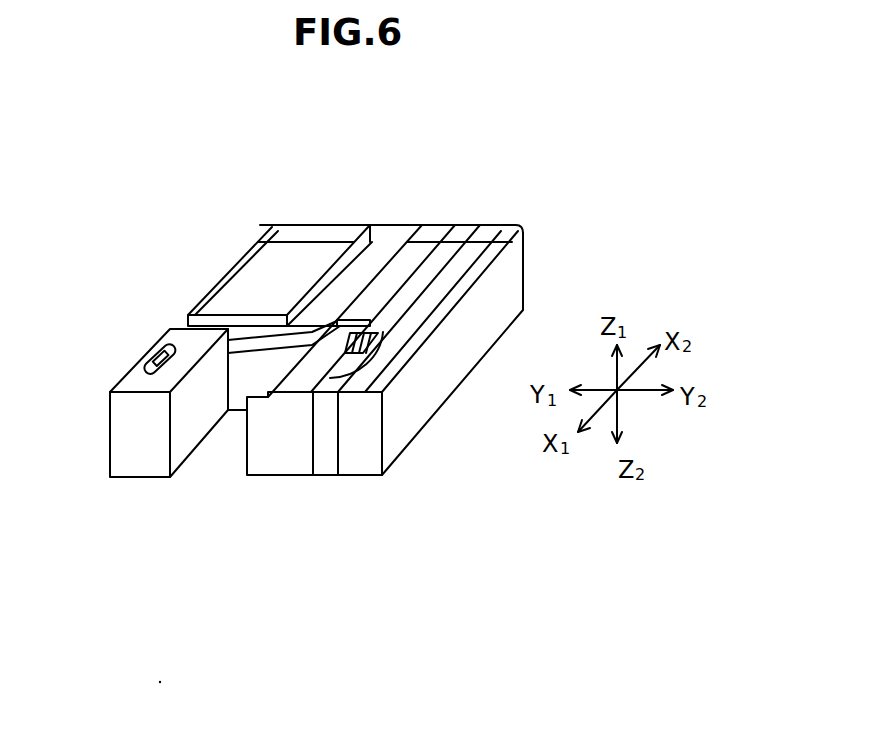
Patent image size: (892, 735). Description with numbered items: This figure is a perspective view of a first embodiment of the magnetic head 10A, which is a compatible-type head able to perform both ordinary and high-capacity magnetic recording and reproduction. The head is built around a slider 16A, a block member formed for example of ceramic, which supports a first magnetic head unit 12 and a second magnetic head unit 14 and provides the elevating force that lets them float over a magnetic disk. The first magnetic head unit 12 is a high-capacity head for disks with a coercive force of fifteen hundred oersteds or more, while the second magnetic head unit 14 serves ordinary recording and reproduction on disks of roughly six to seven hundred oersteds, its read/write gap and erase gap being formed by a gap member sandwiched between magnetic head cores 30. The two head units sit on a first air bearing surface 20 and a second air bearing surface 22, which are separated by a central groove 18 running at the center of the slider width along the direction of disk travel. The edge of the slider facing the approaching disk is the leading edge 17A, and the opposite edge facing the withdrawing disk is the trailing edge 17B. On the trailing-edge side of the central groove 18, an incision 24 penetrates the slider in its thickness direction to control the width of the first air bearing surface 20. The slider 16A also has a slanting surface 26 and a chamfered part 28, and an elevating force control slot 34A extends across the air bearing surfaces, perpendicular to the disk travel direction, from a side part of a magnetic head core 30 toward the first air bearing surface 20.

The magnetic head 10A is at (450, 87).
The first magnetic head unit 12 is at (158, 362).
The second magnetic head unit 14 is at (380, 341).
The slider 16A is at (413, 445).
The leading edge 17A is at (321, 233).
The trailing edge 17B is at (133, 400).
The central groove 18 is at (381, 252).
The first air bearing surface 20 is at (275, 277).
The second air bearing surface 22 is at (416, 255).
The incision 24 is at (233, 443).
The slanting surface 26 is at (283, 247).
The chamfered part 28 is at (212, 287).
The magnetic head core 30 is at (325, 457).
The elevating force control slot 34A is at (270, 345).